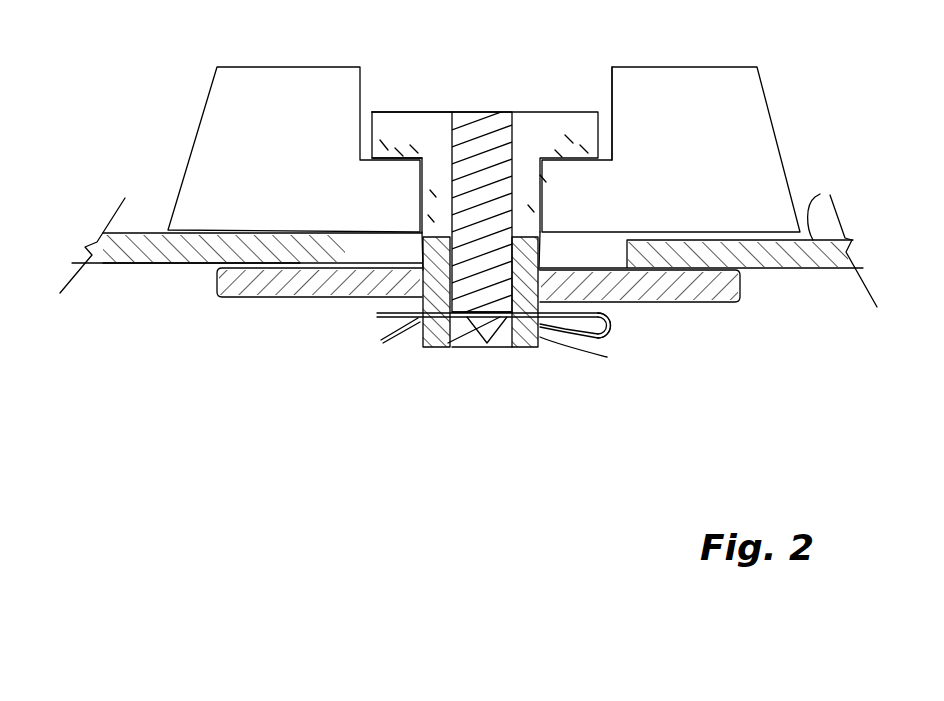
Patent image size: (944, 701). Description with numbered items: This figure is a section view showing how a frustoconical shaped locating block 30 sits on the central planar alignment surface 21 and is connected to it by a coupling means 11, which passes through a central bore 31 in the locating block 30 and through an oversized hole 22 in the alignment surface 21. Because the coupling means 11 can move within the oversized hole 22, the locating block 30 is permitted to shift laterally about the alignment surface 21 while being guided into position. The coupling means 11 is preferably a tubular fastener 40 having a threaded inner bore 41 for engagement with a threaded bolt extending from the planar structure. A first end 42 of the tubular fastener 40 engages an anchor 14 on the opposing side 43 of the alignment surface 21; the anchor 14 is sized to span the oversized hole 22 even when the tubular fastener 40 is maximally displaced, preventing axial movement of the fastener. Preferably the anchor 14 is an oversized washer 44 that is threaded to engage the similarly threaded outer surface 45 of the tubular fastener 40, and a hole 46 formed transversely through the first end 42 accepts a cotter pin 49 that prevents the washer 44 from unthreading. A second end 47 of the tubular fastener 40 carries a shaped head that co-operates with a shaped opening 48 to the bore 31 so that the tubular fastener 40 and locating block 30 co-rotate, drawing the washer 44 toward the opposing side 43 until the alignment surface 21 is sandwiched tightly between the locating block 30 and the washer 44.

The coupling means 11 is at (600, 357).
The anchor 14 is at (310, 324).
The central planar alignment surface 21 is at (148, 232).
The oversized hole 22 is at (627, 243).
The locating block 30 is at (775, 132).
The central bore 31 is at (423, 237).
The tubular fastener 40 is at (540, 115).
The inner bore 41 is at (475, 113).
The first end 42 is at (538, 347).
The opposing side 43 is at (167, 263).
The oversized washer 44 is at (257, 297).
The outer surface 45 is at (417, 333).
The hole 46 is at (487, 337).
The second end 47 is at (372, 110).
The shaped opening 48 is at (612, 85).
The cotter pin 49 is at (613, 328).